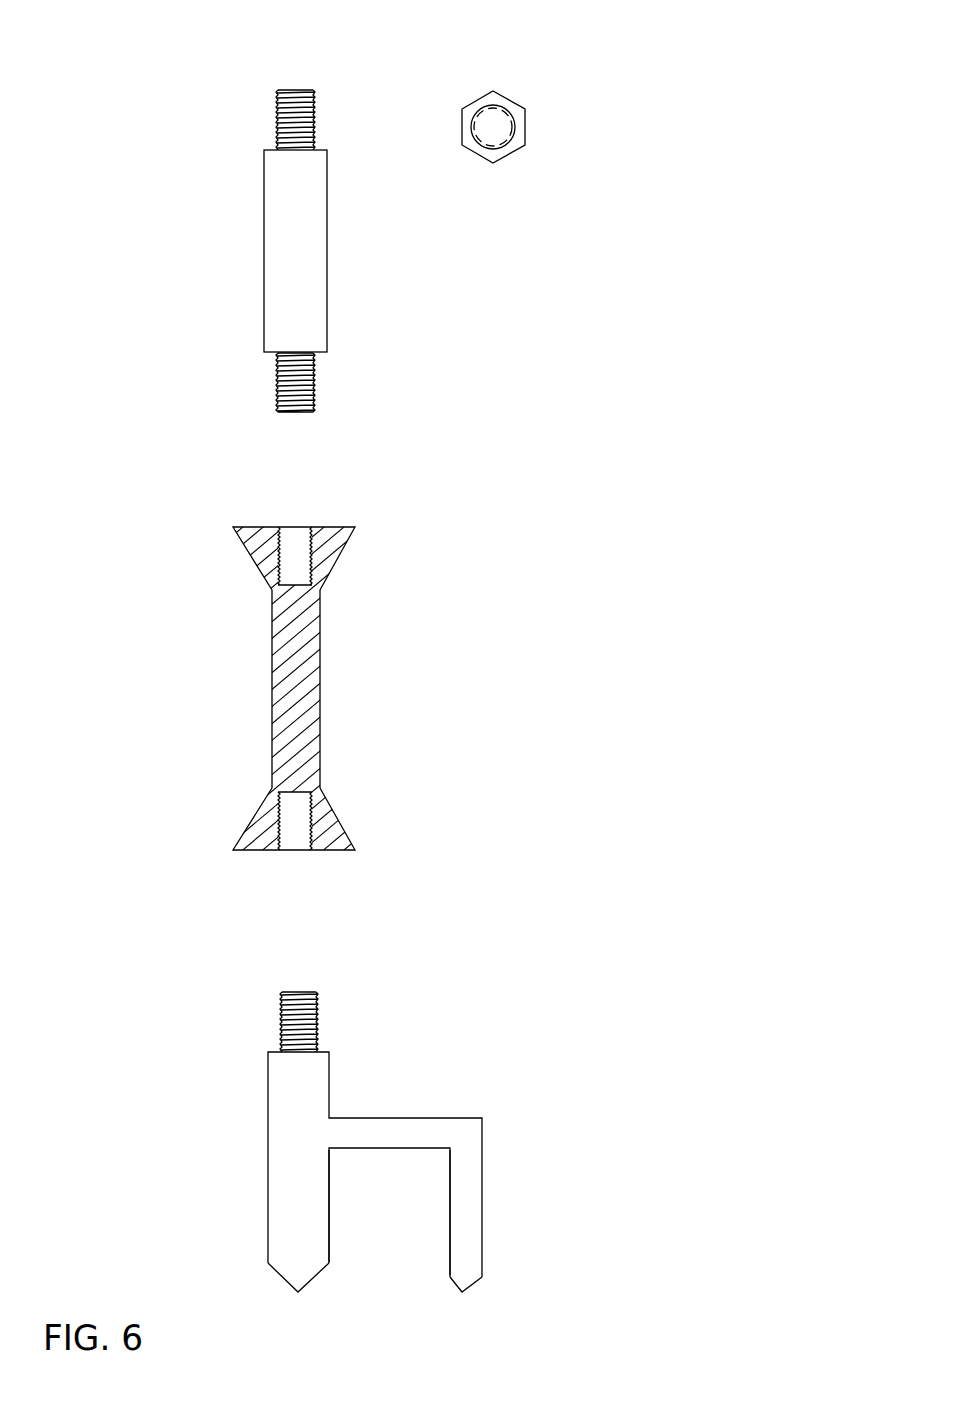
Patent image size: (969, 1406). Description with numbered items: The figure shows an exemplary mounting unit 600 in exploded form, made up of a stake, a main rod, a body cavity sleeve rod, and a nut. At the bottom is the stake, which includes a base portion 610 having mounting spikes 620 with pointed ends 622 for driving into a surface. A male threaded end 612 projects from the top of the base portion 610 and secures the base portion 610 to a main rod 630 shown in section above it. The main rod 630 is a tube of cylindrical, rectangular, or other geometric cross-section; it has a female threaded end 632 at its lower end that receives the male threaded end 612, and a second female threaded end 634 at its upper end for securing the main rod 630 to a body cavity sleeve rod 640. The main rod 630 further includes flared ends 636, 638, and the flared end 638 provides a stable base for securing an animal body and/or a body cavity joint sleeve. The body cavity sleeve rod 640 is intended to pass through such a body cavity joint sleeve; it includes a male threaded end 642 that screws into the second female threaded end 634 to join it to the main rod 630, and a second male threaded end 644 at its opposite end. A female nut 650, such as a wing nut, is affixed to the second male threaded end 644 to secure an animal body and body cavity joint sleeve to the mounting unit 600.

The mounting unit 600 is at (718, 30).
The base portion 610 is at (266, 1137).
The male threaded end 612 is at (321, 1012).
The mounting spikes 620 is at (448, 1216).
The pointed ends 622 is at (457, 1288).
The main rod 630 is at (323, 688).
The female threaded end 632 is at (291, 854).
The second female threaded end 634 is at (290, 525).
The flared end 636 is at (339, 811).
The flared end 638 is at (345, 567).
The body cavity sleeve rod 640 is at (262, 258).
The male threaded end 642 is at (276, 381).
The second male threaded end 644 is at (276, 120).
The female nut 650 is at (509, 160).